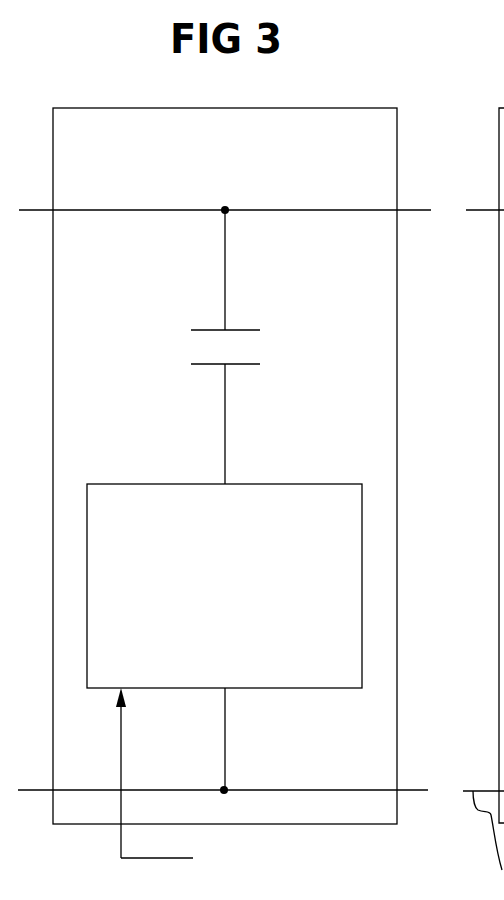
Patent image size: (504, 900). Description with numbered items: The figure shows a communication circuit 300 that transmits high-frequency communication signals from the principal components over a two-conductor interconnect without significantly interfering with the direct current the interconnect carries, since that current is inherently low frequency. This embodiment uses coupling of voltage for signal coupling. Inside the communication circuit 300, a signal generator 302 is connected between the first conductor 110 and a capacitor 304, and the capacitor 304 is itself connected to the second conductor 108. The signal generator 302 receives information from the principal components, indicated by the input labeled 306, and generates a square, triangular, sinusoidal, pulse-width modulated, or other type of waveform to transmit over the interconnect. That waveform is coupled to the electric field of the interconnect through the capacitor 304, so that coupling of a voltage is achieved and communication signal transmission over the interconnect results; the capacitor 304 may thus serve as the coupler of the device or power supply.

The second conductor 108 is at (478, 210).
The first conductor 110 is at (460, 747).
The communication circuit 300 is at (207, 167).
The signal generator 302 is at (207, 610).
The capacitor 304 is at (242, 353).
The waveform transmission from principal components 306 is at (377, 853).